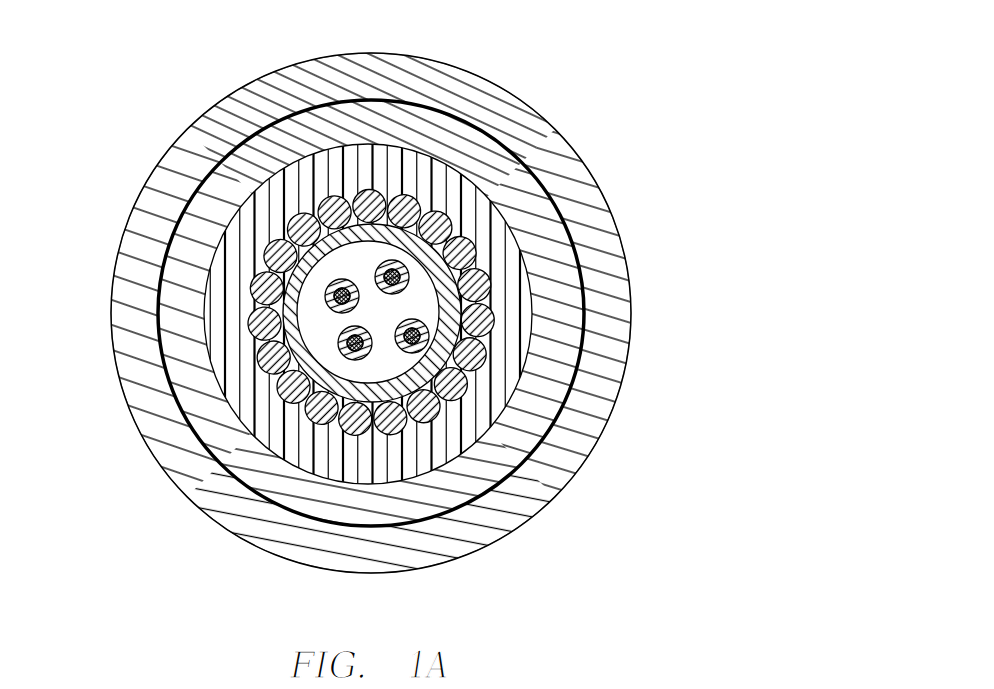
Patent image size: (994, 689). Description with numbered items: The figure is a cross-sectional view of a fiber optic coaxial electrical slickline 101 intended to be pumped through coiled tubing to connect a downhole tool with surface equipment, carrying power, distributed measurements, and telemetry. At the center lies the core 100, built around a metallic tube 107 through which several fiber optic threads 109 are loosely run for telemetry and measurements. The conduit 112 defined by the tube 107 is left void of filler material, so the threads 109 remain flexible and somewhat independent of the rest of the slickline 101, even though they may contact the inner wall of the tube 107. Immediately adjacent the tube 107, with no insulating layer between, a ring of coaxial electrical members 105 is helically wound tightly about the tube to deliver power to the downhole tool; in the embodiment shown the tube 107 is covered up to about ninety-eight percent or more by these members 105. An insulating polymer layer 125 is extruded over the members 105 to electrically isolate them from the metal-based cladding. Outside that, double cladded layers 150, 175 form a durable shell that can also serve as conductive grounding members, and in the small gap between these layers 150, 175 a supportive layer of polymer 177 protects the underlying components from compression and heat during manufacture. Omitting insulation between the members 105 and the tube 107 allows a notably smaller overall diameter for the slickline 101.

The core 100 is at (260, 440).
The fiber optic coaxial electrical slickline 101 is at (583, 51).
The electrical members 105 is at (443, 227).
The metallic tube 107 is at (313, 260).
The fiber optic threads 109 is at (324, 298).
The conduit 112 is at (420, 302).
The insulating polymer layer 125 is at (233, 237).
The cladded layer 150 is at (573, 318).
The cladded layer 175 is at (595, 200).
The supportive layer of polymer 177 is at (592, 348).